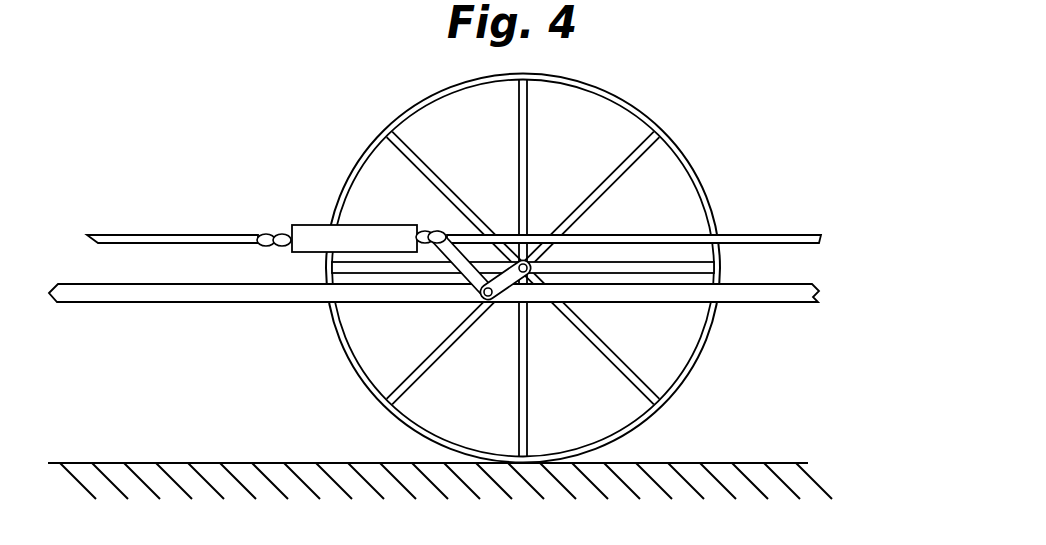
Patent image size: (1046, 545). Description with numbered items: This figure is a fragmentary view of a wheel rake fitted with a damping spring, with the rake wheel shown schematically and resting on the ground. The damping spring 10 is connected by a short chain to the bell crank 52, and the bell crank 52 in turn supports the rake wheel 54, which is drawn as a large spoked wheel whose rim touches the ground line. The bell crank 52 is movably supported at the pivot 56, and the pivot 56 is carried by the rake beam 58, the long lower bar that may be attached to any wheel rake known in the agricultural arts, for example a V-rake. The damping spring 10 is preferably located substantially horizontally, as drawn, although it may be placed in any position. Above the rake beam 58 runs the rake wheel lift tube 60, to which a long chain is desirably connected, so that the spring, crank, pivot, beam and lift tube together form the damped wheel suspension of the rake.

The damping spring 10 is at (303, 224).
The bell crank 52 is at (452, 252).
The rake wheel 54 is at (693, 161).
The pivot 56 is at (488, 298).
The rake beam 58 is at (129, 298).
The rake wheel lift tube 60 is at (163, 236).